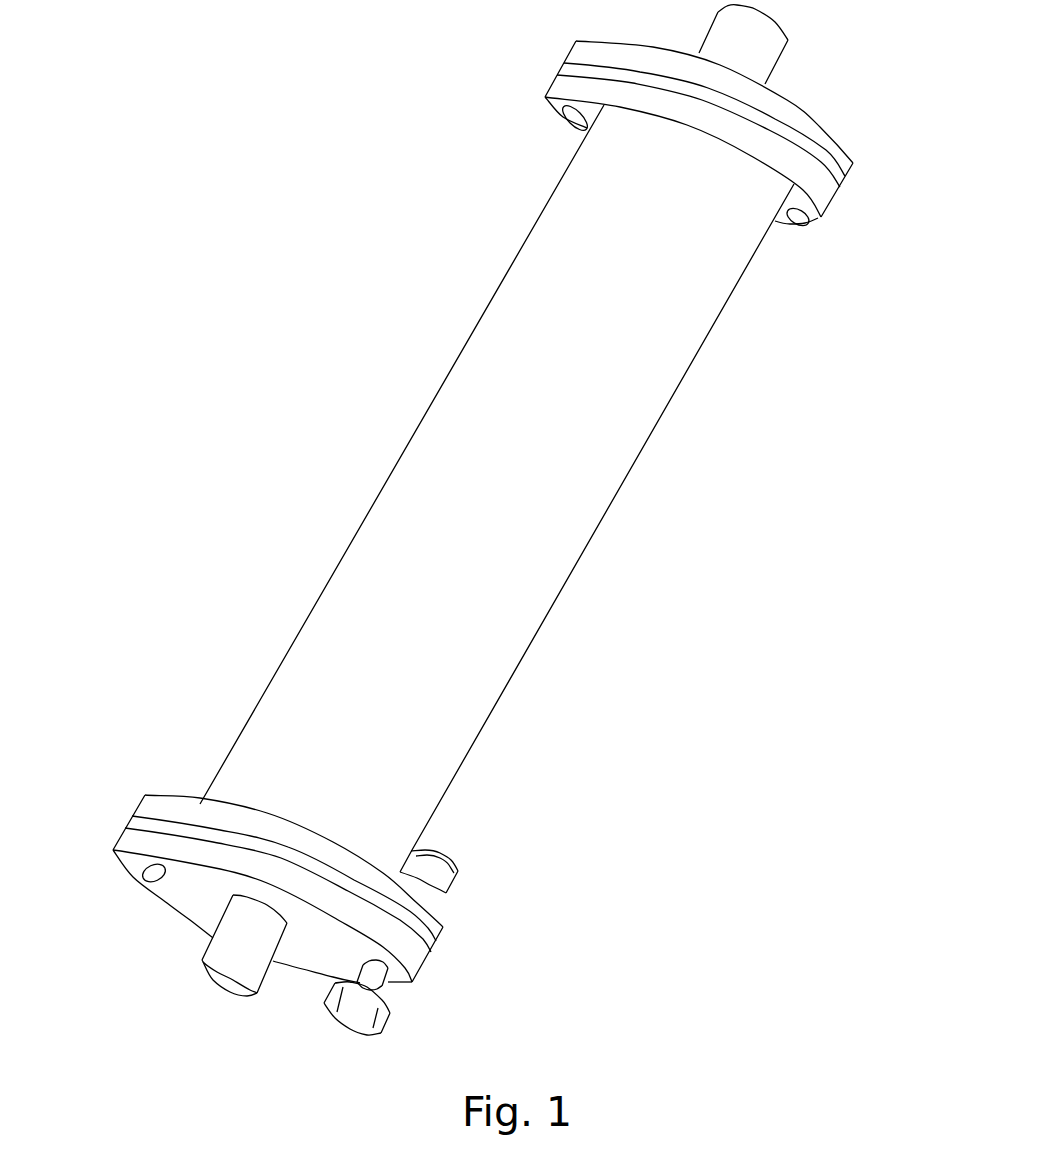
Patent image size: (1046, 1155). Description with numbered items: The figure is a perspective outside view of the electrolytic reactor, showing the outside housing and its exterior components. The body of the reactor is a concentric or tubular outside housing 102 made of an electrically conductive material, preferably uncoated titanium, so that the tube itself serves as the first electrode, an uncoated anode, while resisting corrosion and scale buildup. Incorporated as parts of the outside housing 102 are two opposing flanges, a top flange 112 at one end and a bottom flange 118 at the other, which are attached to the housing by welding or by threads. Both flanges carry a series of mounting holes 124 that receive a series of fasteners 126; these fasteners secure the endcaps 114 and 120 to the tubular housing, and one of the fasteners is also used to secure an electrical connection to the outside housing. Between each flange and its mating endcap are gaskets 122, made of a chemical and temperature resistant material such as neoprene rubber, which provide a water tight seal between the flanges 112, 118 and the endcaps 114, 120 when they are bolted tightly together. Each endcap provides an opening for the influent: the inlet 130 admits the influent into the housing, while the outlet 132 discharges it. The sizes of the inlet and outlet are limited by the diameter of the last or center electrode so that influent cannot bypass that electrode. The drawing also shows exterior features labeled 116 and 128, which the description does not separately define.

The outside housing 102 is at (607, 542).
The top flange 112 is at (845, 218).
The endcap 114 is at (867, 163).
The first end cap 116 is at (545, 63).
The bottom flange 118 is at (455, 938).
The endcap 120 is at (405, 983).
The gaskets 122 is at (112, 816).
The mounting holes 124 is at (560, 118).
The fasteners 126 is at (445, 902).
The outlet fitting 128 is at (400, 1030).
The inlet 130 is at (243, 937).
The outlet 132 is at (733, 52).